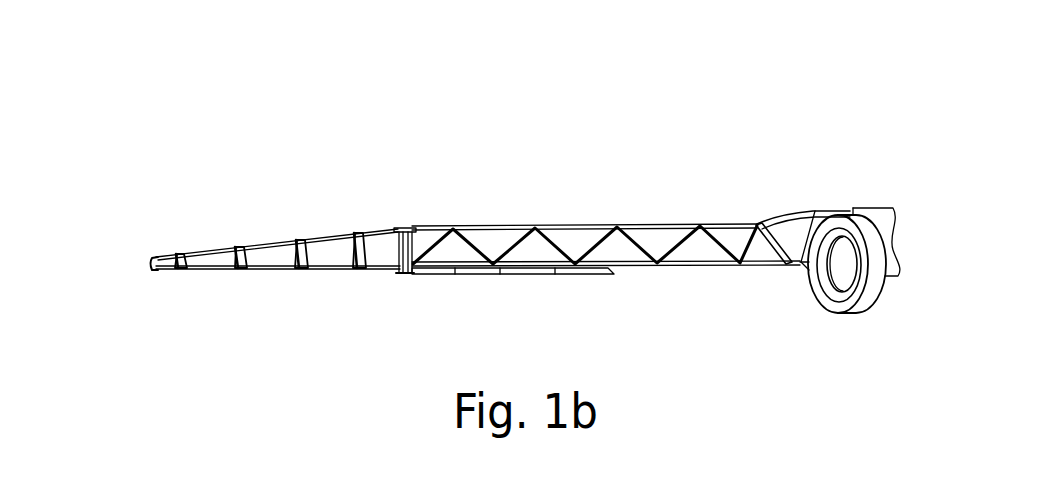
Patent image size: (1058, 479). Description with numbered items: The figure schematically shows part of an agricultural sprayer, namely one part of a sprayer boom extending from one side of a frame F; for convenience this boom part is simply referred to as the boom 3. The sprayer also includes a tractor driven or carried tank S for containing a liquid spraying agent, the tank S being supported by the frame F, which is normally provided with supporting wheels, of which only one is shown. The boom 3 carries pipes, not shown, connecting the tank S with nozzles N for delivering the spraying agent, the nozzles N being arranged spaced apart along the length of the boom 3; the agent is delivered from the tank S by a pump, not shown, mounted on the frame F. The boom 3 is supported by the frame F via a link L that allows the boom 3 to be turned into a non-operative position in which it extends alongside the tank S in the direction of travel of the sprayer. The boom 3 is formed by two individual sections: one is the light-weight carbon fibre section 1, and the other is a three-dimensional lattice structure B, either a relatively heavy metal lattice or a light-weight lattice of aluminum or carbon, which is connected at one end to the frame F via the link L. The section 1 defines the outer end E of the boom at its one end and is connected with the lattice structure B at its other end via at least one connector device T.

The boom 3 is at (507, 146).
The section 1 is at (313, 236).
The outer end E is at (150, 267).
The nozzles N is at (260, 271).
The connector device T is at (402, 227).
The three-dimensional lattice structure B is at (590, 221).
The link L is at (770, 214).
The frame F is at (837, 208).
The tank S is at (878, 204).